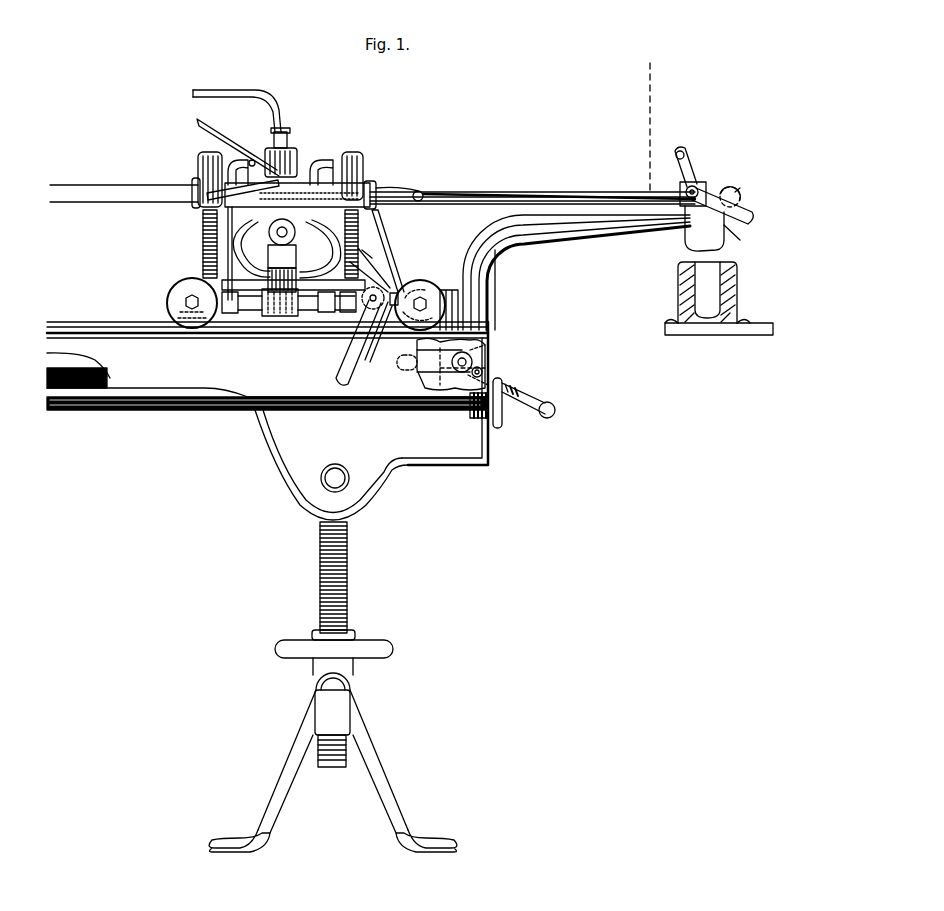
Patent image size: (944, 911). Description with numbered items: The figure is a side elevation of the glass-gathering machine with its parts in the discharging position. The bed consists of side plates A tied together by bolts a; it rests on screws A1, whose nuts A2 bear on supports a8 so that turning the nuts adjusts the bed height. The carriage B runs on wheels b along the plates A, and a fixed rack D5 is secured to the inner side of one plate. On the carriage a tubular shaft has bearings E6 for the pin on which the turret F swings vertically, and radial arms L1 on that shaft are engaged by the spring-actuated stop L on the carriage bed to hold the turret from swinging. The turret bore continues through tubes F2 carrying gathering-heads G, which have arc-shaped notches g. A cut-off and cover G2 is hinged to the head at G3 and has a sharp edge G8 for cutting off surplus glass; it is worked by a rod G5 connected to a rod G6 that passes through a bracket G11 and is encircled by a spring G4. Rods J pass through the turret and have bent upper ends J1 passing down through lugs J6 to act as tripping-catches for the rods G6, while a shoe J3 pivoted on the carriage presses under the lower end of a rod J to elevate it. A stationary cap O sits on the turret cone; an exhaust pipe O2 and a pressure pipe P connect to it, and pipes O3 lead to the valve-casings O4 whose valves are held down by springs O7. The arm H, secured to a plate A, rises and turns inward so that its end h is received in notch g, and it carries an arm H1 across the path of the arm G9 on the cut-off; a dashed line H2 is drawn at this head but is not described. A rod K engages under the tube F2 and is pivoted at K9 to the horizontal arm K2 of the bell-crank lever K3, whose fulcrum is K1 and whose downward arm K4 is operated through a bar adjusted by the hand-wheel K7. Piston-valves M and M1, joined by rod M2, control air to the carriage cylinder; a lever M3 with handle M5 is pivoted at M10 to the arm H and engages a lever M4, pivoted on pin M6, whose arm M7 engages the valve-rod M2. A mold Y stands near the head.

The tube F2 is at (100, 185).
The side plate A is at (88, 340).
The arm H is at (498, 256).
The fixed rack D5 is at (100, 379).
The turret F is at (305, 192).
The spring G4 is at (372, 190).
The bracket G11 is at (380, 188).
The valve-casing O4 is at (198, 158).
The pipe O3 is at (198, 207).
The stationary cap O is at (286, 150).
The pipe P is at (243, 97).
The pipe O2 is at (197, 123).
The rod J is at (230, 235).
The upper end of rod J1 is at (237, 160).
The lug J6 is at (253, 160).
The spring O7 is at (203, 242).
The radial arm L1 is at (210, 278).
The bearing E6 is at (298, 234).
The piston-valve M1 is at (230, 315).
The spring-actuated stop L is at (218, 320).
The carriage B is at (262, 318).
The rod M2 is at (324, 314).
The shoe J3 is at (346, 314).
The rod K is at (374, 240).
The fulcrum K1 is at (370, 268).
The piston-valve M is at (400, 284).
The pin M6 is at (365, 250).
The lever M4 is at (404, 264).
The rod G6 is at (412, 199).
The rod G5 is at (444, 199).
The wheel b is at (172, 294).
The pivot K9 is at (418, 303).
The bell-crank lever K3 is at (343, 364).
The arm K4 is at (362, 355).
The arm M7 is at (364, 368).
The horizontal arm K2 is at (399, 354).
The pivot M10 is at (482, 356).
The lever M3 is at (497, 380).
The handle M5 is at (548, 402).
The hand-wheel K7 is at (502, 420).
The bolt a is at (340, 479).
The screw A1 is at (340, 566).
The nut A2 is at (378, 648).
The support a8 is at (360, 722).
The axis line H2 is at (654, 116).
The arm H1 is at (690, 162).
The arm G9 is at (676, 154).
The hinge G3 is at (698, 188).
The cut-off G2 is at (740, 210).
The arc-shaped notch g is at (727, 187).
The end of arm h is at (741, 181).
The gathering-head G is at (690, 230).
The sharp edge G8 is at (736, 241).
The mold Y is at (678, 290).